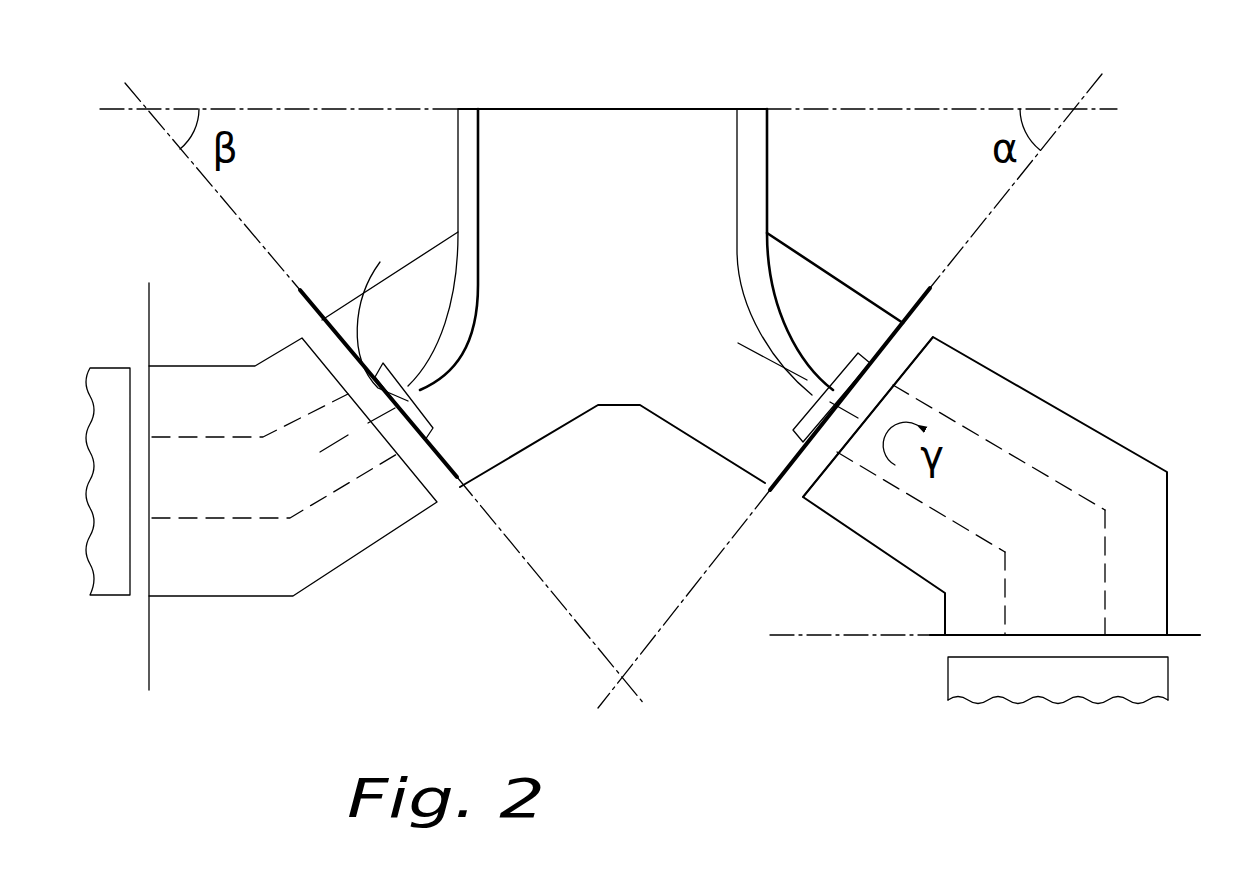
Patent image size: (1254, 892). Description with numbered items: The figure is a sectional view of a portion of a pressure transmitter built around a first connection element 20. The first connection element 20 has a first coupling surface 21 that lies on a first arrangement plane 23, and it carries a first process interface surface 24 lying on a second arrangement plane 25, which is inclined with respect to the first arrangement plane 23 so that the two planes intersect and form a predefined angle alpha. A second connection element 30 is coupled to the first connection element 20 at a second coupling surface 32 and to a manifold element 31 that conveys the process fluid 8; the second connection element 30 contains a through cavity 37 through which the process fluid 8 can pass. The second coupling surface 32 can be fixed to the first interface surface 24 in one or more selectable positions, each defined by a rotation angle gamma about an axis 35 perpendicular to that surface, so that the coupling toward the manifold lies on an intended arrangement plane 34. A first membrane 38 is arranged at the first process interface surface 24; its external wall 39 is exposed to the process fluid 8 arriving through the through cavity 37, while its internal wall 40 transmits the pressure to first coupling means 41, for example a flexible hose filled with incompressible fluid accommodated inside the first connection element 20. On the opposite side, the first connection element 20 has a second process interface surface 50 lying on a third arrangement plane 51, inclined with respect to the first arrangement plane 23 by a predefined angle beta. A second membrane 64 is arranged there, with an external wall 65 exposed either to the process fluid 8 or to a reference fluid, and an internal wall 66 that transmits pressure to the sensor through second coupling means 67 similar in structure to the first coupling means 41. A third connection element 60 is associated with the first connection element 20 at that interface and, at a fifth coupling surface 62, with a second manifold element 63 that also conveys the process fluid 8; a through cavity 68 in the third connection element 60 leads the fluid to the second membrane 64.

The process fluid 8 is at (1013, 510).
The first connection element 20 is at (808, 240).
The first coupling surface 21 is at (640, 107).
The first arrangement plane 23 is at (952, 108).
The first process interface surface 24 is at (893, 346).
The second arrangement plane 25 is at (998, 203).
The second connection element 30 is at (1095, 422).
The manifold element 31 is at (1133, 707).
The second coupling surface 32 is at (803, 485).
The arrangement plane 34 is at (838, 640).
The axis 35 is at (968, 641).
The through cavity 37 is at (1092, 496).
The first membrane 38 is at (848, 354).
The external wall 39 is at (853, 410).
The internal wall 40 is at (820, 388).
The first coupling means 41 is at (748, 207).
The second process interface surface 50 is at (455, 488).
The third arrangement plane 51 is at (265, 248).
The third connection element 60 is at (327, 458).
The fifth coupling surface 62 is at (143, 395).
The second manifold element 63 is at (107, 582).
The second membrane 64 is at (443, 418).
The external wall 65 is at (380, 262).
The internal wall 66 is at (418, 383).
The second coupling means 67 is at (468, 140).
The through cavity 68 is at (207, 528).